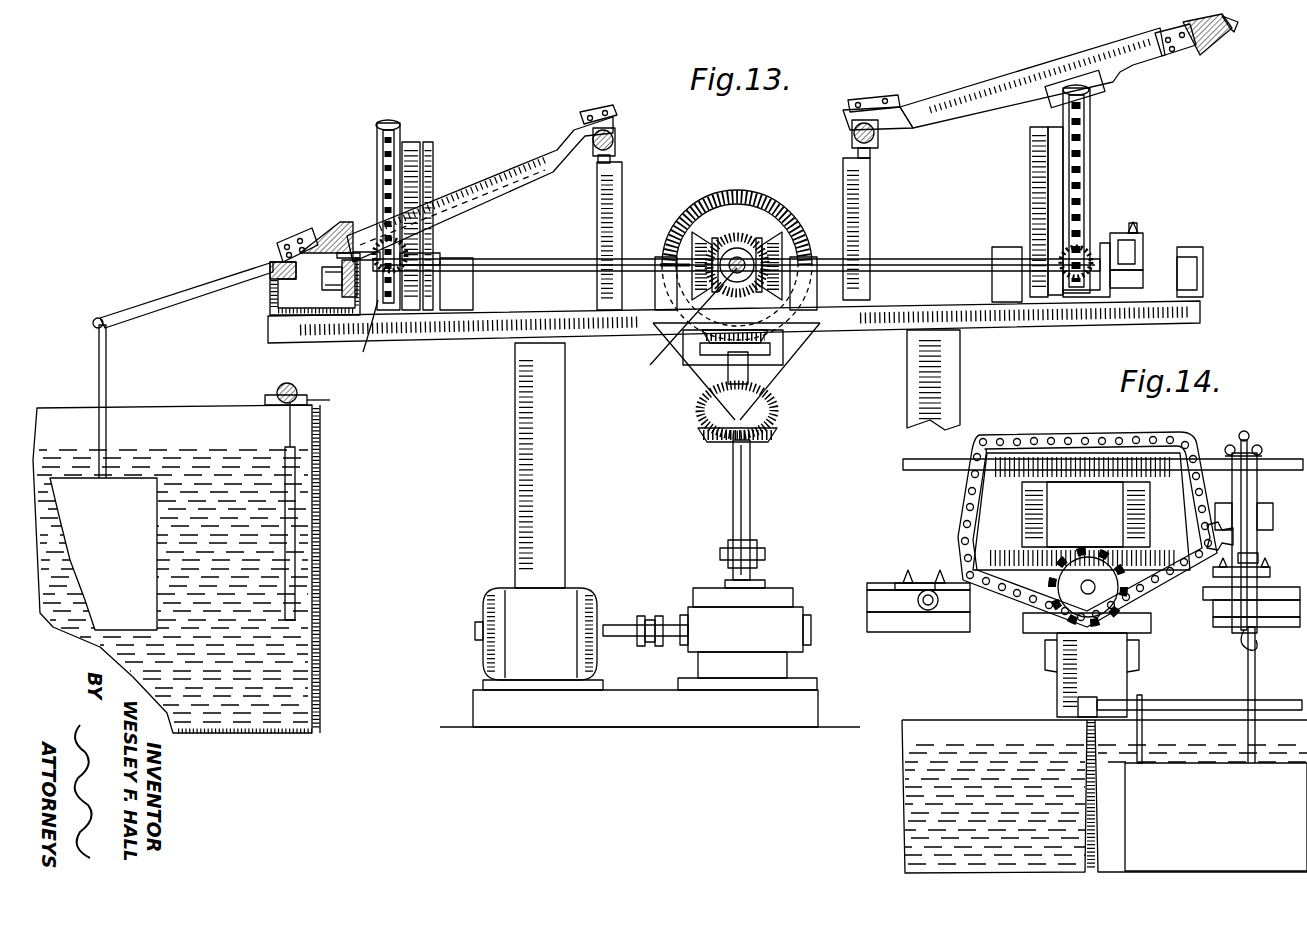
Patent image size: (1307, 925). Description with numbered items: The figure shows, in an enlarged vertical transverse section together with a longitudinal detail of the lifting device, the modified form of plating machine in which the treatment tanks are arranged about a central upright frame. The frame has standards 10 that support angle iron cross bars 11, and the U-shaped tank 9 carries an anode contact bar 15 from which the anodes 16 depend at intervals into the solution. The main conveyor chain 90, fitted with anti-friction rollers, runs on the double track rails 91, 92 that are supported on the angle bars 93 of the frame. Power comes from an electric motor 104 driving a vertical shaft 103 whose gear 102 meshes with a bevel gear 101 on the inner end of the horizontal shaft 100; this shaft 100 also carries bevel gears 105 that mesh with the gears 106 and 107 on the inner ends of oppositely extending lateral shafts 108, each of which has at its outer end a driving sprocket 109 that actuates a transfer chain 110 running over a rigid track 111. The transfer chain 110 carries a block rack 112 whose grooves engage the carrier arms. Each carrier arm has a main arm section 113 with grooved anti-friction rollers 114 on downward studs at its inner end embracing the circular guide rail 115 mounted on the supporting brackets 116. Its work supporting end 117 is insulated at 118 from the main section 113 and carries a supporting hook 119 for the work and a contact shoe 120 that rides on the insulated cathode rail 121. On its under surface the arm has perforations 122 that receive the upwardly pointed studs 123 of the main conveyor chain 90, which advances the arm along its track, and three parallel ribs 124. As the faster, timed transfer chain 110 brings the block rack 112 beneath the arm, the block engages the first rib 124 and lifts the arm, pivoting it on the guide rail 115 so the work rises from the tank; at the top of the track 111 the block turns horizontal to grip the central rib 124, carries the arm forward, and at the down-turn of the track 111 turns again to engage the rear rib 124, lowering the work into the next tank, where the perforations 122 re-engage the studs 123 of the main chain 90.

In FIG. 13, the U-shaped tank 9 is at (320, 590).
In FIG. 14, the U-shaped tank 9 is at (1086, 808).
In FIG. 13, the standards 10 is at (560, 473).
In FIG. 13, the angle iron cross bars 11 is at (463, 330).
In FIG. 13, the anode contact bar 15 is at (278, 388).
In FIG. 14, the anode contact bar 15 is at (1193, 703).
In FIG. 13, the anodes 16 is at (296, 515).
In FIG. 14, the anodes 16 is at (1213, 765).
In FIG. 13, the main conveyor chain 90 is at (1148, 248).
In FIG. 14, the main conveyor chain 90 is at (870, 600).
In FIG. 13, the track rail 91 is at (1133, 232).
In FIG. 14, the track rail 91 is at (875, 585).
In FIG. 13, the track rail 92 is at (1140, 276).
In FIG. 14, the track rail 92 is at (870, 618).
In FIG. 13, the angle bars 93 is at (1105, 255).
In FIG. 13, the shaft 100 is at (681, 325).
In FIG. 13, the bevel gear 101 is at (738, 193).
In FIG. 13, the bevel gear 102 is at (768, 345).
In FIG. 13, the vertical shaft 103 is at (745, 493).
In FIG. 13, the electric motor 104 is at (650, 657).
In FIG. 13, the bevel gears 105 is at (755, 240).
In FIG. 13, the gear 106 is at (786, 248).
In FIG. 13, the gear 107 is at (678, 238).
In FIG. 13, the lateral shafts 108 is at (565, 265).
In FIG. 14, the lateral shafts 108 is at (1092, 580).
In FIG. 13, the driving sprocket 109 is at (400, 258).
In FIG. 14, the driving sprocket 109 is at (1082, 562).
In FIG. 13, the transfer chain 110 is at (392, 115).
In FIG. 14, the transfer chain 110 is at (1055, 432).
In FIG. 13, the rigid track 111 is at (378, 132).
In FIG. 14, the rigid track 111 is at (975, 505).
In FIG. 13, the block rack 112 is at (1068, 105).
In FIG. 14, the block rack 112 is at (1207, 536).
In FIG. 13, the main arm section 113 is at (502, 172).
In FIG. 14, the main arm section 113 is at (1257, 490).
In FIG. 13, the grooved anti-friction rollers 114 is at (620, 138).
In FIG. 14, the grooved anti-friction rollers 114 is at (1262, 448).
In FIG. 13, the guide rail 115 is at (588, 120).
In FIG. 14, the guide rail 115 is at (912, 472).
In FIG. 13, the supporting brackets 116 is at (597, 216).
In FIG. 13, the work supporting end 117 is at (188, 285).
In FIG. 14, the work supporting end 117 is at (1245, 625).
In FIG. 13, the insulation 118 is at (290, 240).
In FIG. 14, the insulation 118 is at (1258, 560).
In FIG. 13, the supporting hook 119 is at (98, 316).
In FIG. 13, the contact shoe 120 is at (277, 262).
In FIG. 13, the insulated cathode rail 121 is at (268, 280).
In FIG. 13, the perforations 122 is at (330, 240).
In FIG. 13, the studs 123 is at (1140, 238).
In FIG. 14, the studs 123 is at (940, 572).
In FIG. 13, the parallel ribs 124 is at (415, 240).
In FIG. 14, the parallel ribs 124 is at (1276, 514).